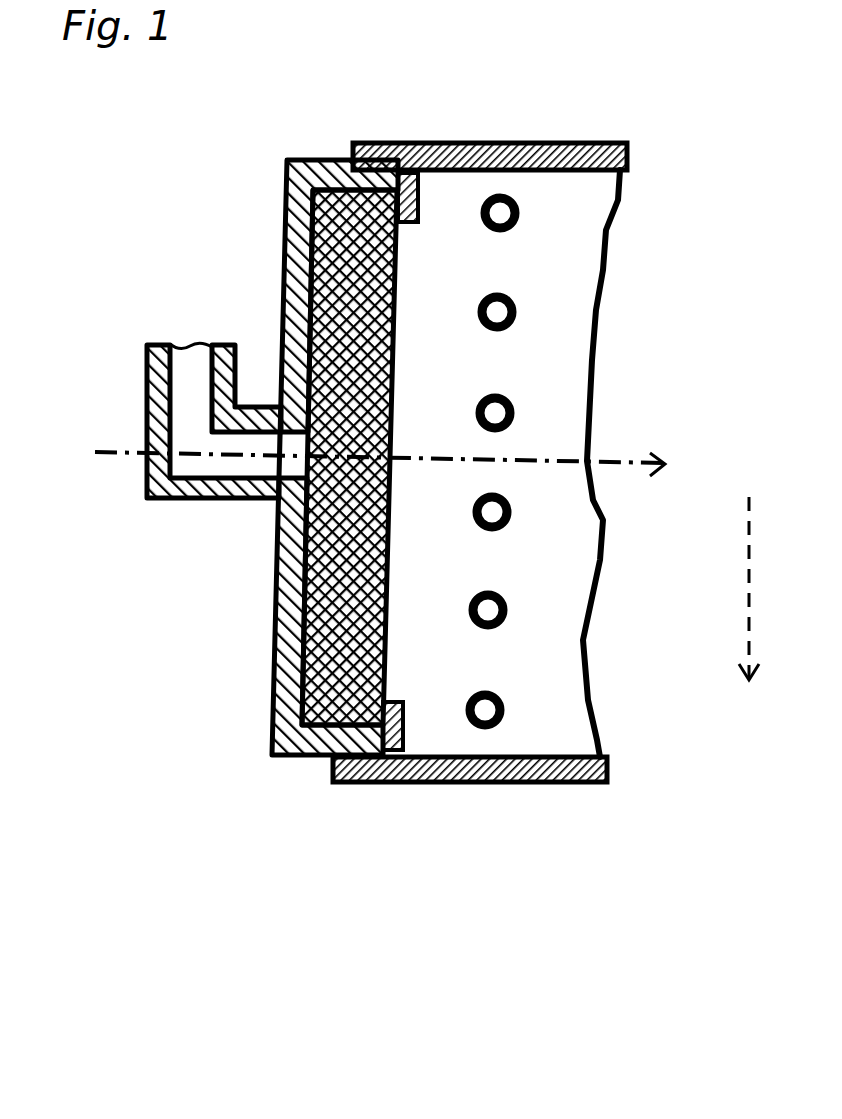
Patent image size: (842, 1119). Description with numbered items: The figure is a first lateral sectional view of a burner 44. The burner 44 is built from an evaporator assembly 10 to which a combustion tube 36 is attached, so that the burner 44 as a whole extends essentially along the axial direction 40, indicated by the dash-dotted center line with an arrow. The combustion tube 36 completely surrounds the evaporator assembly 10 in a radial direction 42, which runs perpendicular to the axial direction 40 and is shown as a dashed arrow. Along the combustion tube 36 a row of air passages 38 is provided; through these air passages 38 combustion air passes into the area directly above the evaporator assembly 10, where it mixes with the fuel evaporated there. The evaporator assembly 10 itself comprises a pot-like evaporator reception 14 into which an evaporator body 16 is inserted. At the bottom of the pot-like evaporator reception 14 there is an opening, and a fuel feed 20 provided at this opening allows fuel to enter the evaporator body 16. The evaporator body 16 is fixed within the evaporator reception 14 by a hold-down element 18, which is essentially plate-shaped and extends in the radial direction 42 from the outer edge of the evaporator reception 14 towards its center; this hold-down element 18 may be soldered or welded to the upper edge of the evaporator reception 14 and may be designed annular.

The evaporator assembly 10 is at (296, 511).
The evaporator reception 14 is at (284, 268).
The evaporator body 16 is at (396, 325).
The hold-down element 18 is at (406, 716).
The fuel feed 20 is at (193, 500).
The combustion tube 36 is at (562, 792).
The air passages 38 is at (497, 692).
The axial direction 40 is at (638, 450).
The radial direction 42 is at (742, 598).
The burner 44 is at (106, 963).